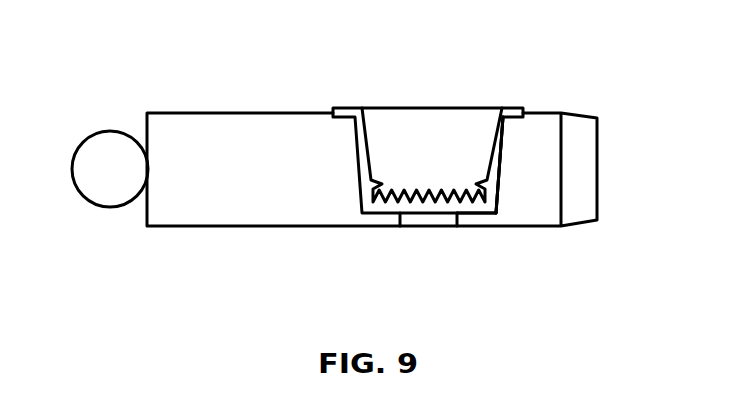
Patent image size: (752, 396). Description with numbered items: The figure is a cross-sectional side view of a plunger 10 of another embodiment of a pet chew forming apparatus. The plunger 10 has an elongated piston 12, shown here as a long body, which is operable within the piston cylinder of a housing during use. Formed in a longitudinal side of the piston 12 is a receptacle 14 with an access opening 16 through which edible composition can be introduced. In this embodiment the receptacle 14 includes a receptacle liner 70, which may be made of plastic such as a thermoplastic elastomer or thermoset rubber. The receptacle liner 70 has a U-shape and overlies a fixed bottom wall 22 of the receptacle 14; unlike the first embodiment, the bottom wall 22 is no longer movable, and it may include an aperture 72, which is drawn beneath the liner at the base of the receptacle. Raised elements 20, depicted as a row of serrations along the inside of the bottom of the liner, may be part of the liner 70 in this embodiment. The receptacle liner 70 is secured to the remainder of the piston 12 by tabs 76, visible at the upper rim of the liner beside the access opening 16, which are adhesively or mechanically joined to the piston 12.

The plunger 10 is at (262, 76).
The piston 12 is at (213, 227).
The receptacle 14 is at (447, 167).
The access opening 16 is at (430, 108).
The raised elements 20 is at (387, 198).
The bottom wall 22 is at (475, 221).
The receptacle liner 70 is at (517, 210).
The aperture 72 is at (428, 217).
The tabs 76 is at (503, 115).